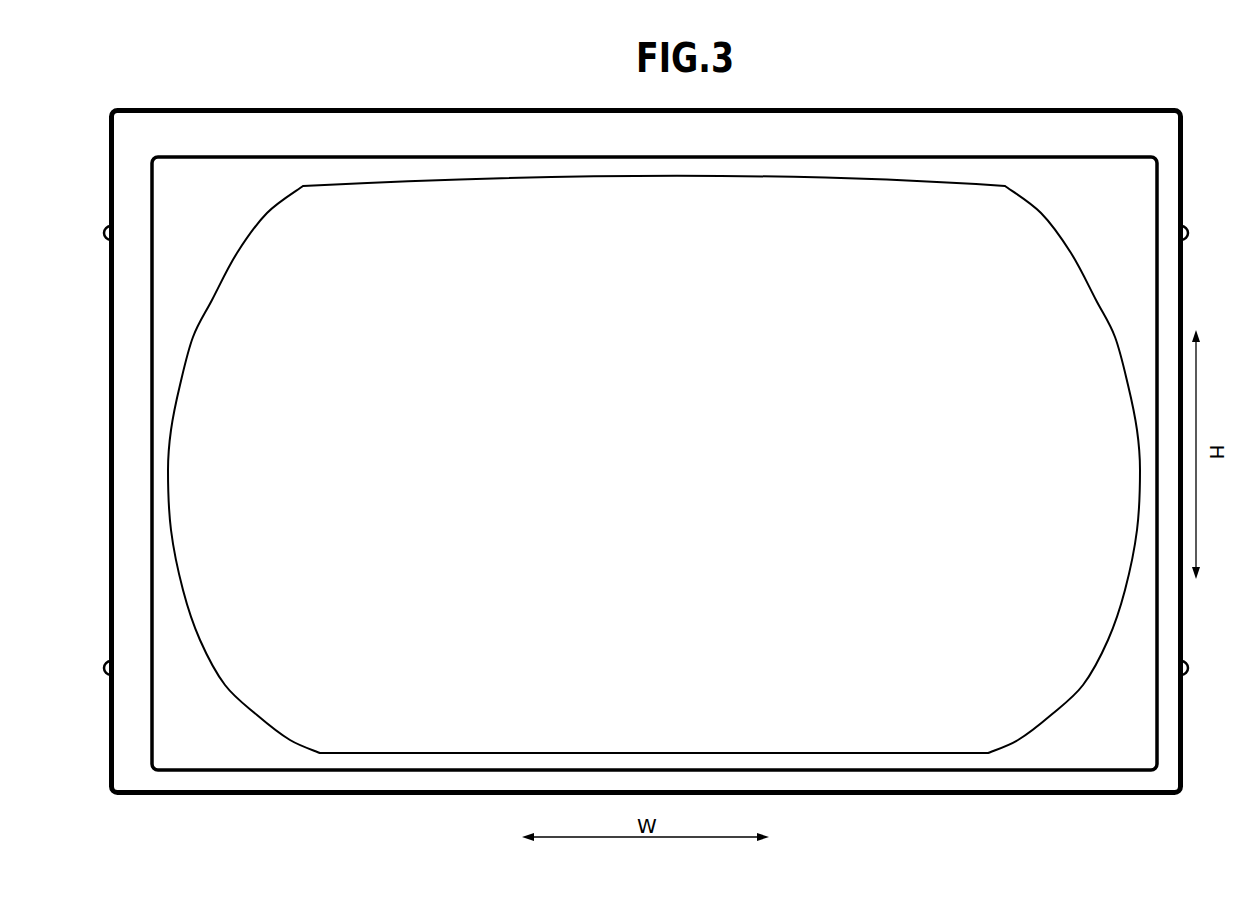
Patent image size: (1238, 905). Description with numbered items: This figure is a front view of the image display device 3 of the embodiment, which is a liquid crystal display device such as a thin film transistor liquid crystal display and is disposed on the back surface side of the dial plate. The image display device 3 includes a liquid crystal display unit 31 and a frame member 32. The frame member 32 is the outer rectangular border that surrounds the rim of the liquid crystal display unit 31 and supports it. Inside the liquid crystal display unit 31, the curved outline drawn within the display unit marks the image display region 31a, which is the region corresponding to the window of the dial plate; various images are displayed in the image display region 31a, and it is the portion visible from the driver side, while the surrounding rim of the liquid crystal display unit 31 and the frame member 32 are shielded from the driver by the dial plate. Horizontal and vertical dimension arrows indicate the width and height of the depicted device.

The image display device 3 is at (480, 94).
The liquid crystal display unit 31 is at (202, 181).
The image display region 31a is at (882, 179).
The frame member 32 is at (969, 109).